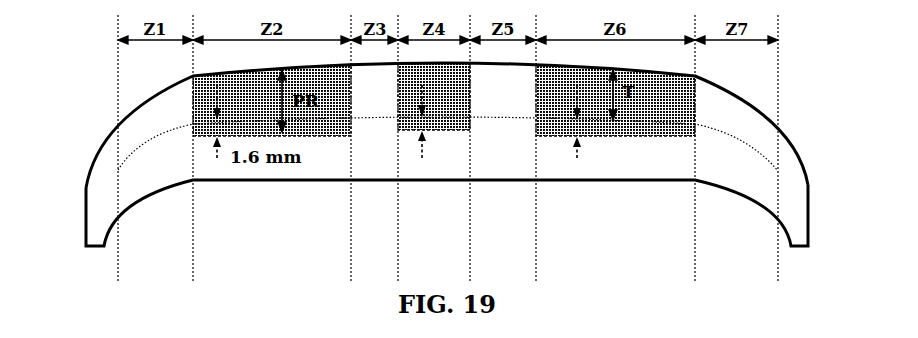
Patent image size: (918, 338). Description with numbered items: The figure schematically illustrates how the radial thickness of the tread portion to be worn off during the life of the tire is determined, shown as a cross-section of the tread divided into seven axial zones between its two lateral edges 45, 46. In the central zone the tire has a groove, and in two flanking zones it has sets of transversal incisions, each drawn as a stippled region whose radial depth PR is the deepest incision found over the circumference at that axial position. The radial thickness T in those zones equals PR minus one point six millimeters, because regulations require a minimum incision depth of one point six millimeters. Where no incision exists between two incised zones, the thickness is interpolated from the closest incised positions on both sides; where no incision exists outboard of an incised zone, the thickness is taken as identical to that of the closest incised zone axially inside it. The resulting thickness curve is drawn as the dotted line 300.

The first lateral end of lens 45 is at (113, 121).
The second lateral end of lens 46 is at (781, 116).
The dotted line 300 is at (503, 120).